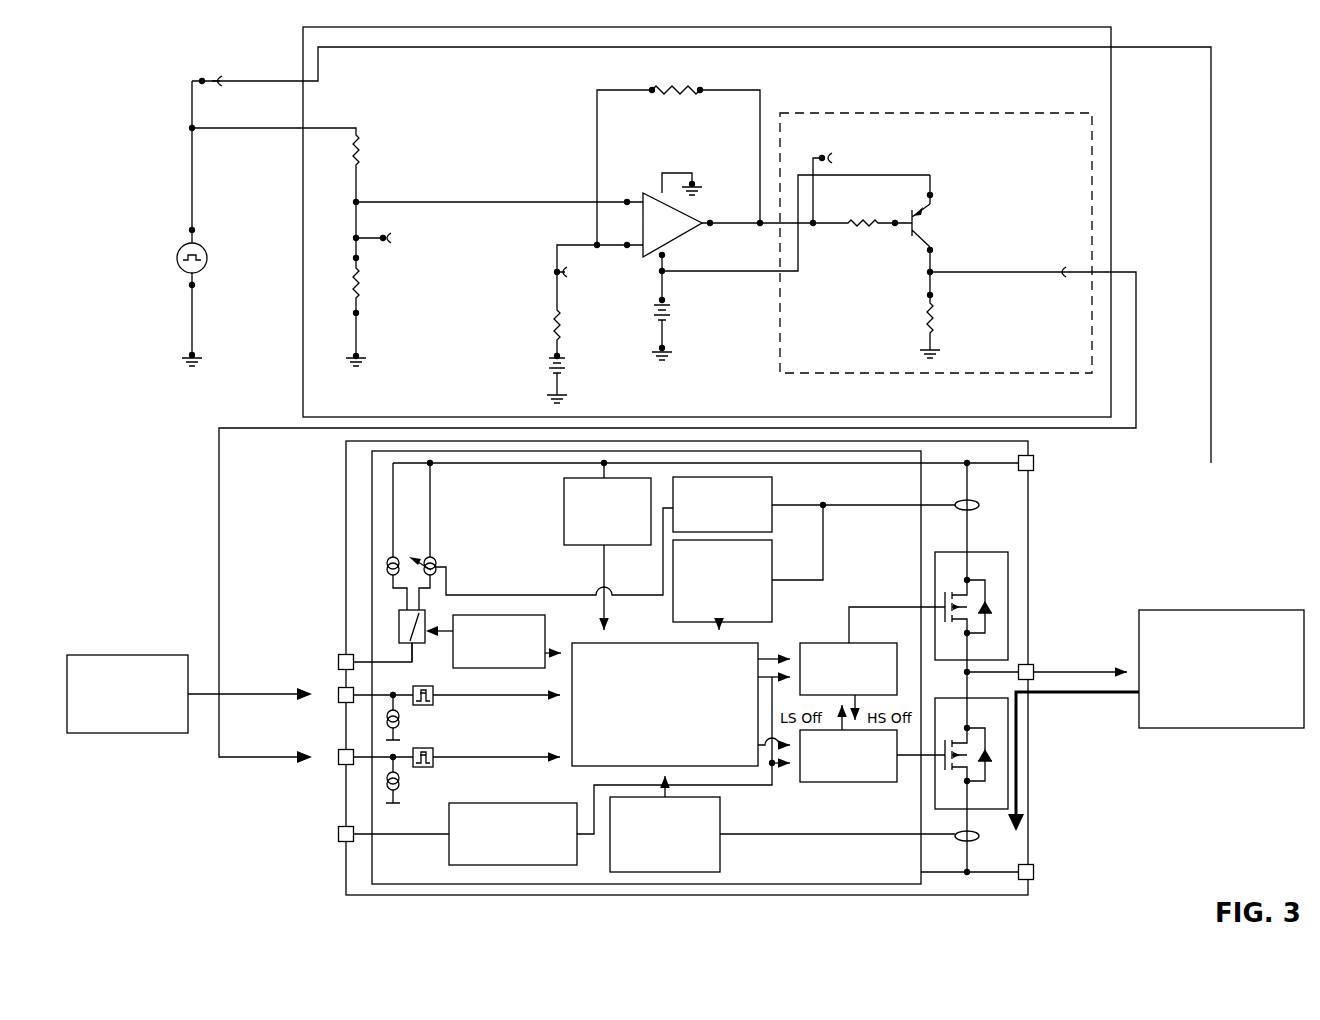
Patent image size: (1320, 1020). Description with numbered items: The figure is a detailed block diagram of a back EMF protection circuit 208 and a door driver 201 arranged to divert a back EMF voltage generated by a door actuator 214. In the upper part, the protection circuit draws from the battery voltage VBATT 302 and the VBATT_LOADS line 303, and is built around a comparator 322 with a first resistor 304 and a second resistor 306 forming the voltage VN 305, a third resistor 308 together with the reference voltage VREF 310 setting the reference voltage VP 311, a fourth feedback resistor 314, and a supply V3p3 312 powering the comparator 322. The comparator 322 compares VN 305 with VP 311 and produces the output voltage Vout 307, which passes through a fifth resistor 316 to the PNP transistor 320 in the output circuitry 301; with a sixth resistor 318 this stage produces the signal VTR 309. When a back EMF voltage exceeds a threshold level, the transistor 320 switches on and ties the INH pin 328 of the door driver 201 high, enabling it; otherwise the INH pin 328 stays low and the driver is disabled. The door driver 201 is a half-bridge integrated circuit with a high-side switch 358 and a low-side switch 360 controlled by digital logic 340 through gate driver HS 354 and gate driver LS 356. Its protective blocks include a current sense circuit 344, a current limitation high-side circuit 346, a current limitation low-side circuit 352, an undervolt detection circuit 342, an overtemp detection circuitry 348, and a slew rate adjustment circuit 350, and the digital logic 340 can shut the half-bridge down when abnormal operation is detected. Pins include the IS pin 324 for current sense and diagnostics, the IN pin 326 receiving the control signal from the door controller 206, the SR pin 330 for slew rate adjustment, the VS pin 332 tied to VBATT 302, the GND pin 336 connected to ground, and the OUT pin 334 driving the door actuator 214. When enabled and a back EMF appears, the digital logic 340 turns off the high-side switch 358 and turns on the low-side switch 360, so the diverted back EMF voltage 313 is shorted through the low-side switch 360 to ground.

The door driver 201 is at (687, 682).
The door controller 206 is at (138, 655).
The back EMF protection circuit 208 is at (1012, 408).
The door actuator 214 is at (1208, 610).
The output circuitry 301 is at (851, 112).
The battery voltage VBATT 302 is at (274, 281).
The battery loads supply line VBATT_LOADS 303 is at (243, 27).
The resistor R1 304 is at (411, 173).
The voltage VN 305 is at (449, 230).
The resistor R2 306 is at (423, 315).
The voltage Vout 307 is at (909, 153).
The resistor R3 308 is at (538, 343).
The voltage VTR 309 is at (1083, 263).
The reference voltage VREF 310 is at (629, 388).
The reference voltage VP 311 is at (546, 273).
The supply voltage V3p3 312 is at (731, 336).
The diverted back EMF voltage 313 is at (1122, 773).
The resistor R4 314 is at (695, 147).
The resistor R5 316 is at (901, 214).
The resistor R6 318 is at (988, 328).
The transistor T1 320 is at (997, 235).
The comparator 322 is at (681, 236).
The IS pin 324 is at (338, 660).
The IN pin 326 is at (338, 693).
The INH pin 328 is at (338, 755).
The SR pin 330 is at (338, 836).
The VS pin 332 is at (1034, 474).
The OUT pin 334 is at (1033, 664).
The GND pin 336 is at (1033, 864).
The digital logic 340 is at (572, 735).
The undervolt detection circuit 342 is at (564, 500).
The current sense circuit 344 is at (772, 495).
The current limitation high-side circuit 346 is at (772, 606).
The overtemp detection circuitry 348 is at (521, 615).
The slew rate adjustment circuit 350 is at (519, 803).
The current limitation low-side circuit 352 is at (720, 852).
The gate driver HS 354 is at (846, 643).
The gate driver LS 356 is at (872, 782).
The high-side switch 358 is at (986, 552).
The low-side switch 360 is at (935, 795).